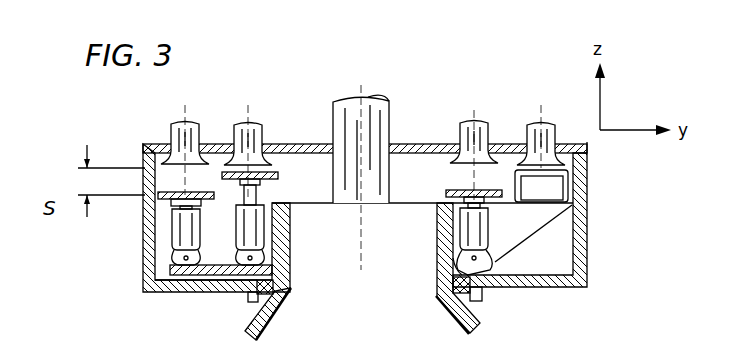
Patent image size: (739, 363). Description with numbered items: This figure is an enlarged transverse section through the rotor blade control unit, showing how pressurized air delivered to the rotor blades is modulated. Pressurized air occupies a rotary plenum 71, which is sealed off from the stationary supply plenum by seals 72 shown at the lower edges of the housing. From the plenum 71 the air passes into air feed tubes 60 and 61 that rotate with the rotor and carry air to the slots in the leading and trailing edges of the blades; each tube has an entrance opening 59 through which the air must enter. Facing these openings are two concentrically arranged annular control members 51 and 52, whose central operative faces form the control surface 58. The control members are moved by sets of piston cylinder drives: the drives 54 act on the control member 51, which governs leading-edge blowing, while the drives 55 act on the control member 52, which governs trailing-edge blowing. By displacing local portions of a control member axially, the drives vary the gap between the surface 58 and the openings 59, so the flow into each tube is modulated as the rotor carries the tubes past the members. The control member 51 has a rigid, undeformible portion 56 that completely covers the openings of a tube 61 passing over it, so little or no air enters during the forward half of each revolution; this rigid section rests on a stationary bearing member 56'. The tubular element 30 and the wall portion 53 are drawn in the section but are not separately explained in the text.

The tubular member 30 is at (346, 130).
The control member 51 is at (170, 204).
The control member 52 is at (268, 178).
The housing bottom wall 53 is at (185, 287).
The piston cylinder drive 54 is at (183, 228).
The piston cylinder drive 55 is at (238, 262).
The undeformible portion 56 is at (570, 183).
The stationary bearing member 56' is at (533, 267).
The control surface 58 is at (168, 190).
The entrance opening 59 is at (168, 146).
The air feed tube 60 is at (231, 140).
The air feed tube 61 is at (201, 135).
The rotary plenum 71 is at (424, 157).
The seal 72 is at (258, 322).